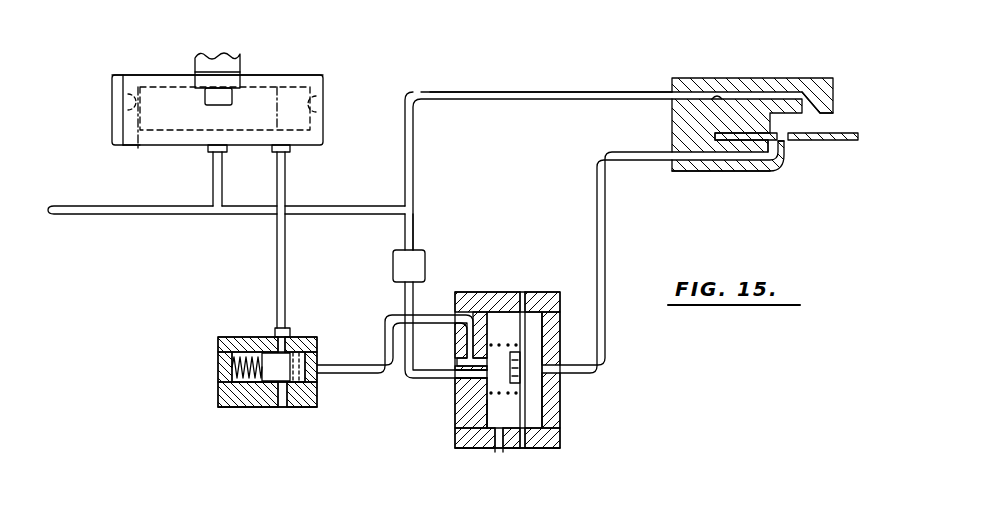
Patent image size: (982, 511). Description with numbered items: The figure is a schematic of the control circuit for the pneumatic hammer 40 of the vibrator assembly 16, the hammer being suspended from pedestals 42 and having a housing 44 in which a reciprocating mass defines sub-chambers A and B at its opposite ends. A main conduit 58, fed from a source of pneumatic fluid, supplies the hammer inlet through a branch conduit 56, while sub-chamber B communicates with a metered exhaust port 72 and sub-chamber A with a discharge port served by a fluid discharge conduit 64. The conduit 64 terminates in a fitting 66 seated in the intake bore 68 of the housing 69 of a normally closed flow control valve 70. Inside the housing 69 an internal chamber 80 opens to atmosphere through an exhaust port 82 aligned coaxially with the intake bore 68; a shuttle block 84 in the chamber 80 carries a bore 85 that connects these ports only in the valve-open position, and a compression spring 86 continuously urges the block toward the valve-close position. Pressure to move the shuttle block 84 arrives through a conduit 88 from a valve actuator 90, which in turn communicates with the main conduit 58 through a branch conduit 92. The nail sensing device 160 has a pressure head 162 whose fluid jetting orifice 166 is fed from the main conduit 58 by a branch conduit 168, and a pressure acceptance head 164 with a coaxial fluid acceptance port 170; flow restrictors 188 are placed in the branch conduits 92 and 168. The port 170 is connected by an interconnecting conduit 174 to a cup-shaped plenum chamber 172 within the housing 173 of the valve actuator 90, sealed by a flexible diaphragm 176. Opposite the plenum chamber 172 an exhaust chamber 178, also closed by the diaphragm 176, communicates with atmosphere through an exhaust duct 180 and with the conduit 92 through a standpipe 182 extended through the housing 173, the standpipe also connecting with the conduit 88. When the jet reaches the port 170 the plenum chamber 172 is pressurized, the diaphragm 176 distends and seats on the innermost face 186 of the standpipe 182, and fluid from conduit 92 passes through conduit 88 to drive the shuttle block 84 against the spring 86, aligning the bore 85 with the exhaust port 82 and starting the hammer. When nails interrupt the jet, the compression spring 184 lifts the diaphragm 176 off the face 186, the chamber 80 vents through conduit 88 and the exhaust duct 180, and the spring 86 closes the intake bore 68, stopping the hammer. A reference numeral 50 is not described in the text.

The vibrator assembly 16 is at (167, 72).
The pneumatic hammer 40 is at (267, 68).
The pedestals 42 is at (215, 55).
The housing 44 is at (138, 78).
The metered exhaust port 72 is at (140, 150).
The sub-chamber A is at (318, 97).
The sub-chamber B is at (128, 100).
The branch conduit 56 is at (213, 175).
The fluid discharge conduit 64 is at (285, 186).
The main conduit 58 is at (155, 214).
The fluid system 50 is at (483, 75).
The branch conduit 168 is at (571, 92).
The branch conduit 92 is at (413, 245).
The flow restrictors 188 is at (393, 265).
The flow control valve 70 is at (215, 333).
The fitting 66 is at (275, 331).
The intake bore 68 is at (283, 348).
The housing 69 is at (220, 396).
The internal chamber 80 is at (250, 378).
The exhaust port 82 is at (283, 407).
The shuttle block 84 is at (272, 375).
The bore 85 is at (318, 357).
The compression spring 86 is at (232, 368).
The conduit 88 is at (367, 369).
The valve actuator 90 is at (505, 282).
The innermost face 186 is at (504, 343).
The flexible diaphragm 176 is at (527, 394).
The plenum chamber 172 is at (533, 410).
The housing 173 is at (553, 438).
The exhaust chamber 178 is at (493, 415).
The exhaust duct 180 is at (497, 452).
The standpipe 182 is at (471, 374).
The compression spring 184 is at (513, 398).
The interconnecting conduit 174 is at (597, 225).
The nail sensing device 160 is at (750, 76).
The pressure head 162 is at (823, 82).
The pressure acceptance head 164 is at (752, 171).
The fluid jetting orifice 166 is at (795, 118).
The fluid acceptance port 170 is at (778, 147).